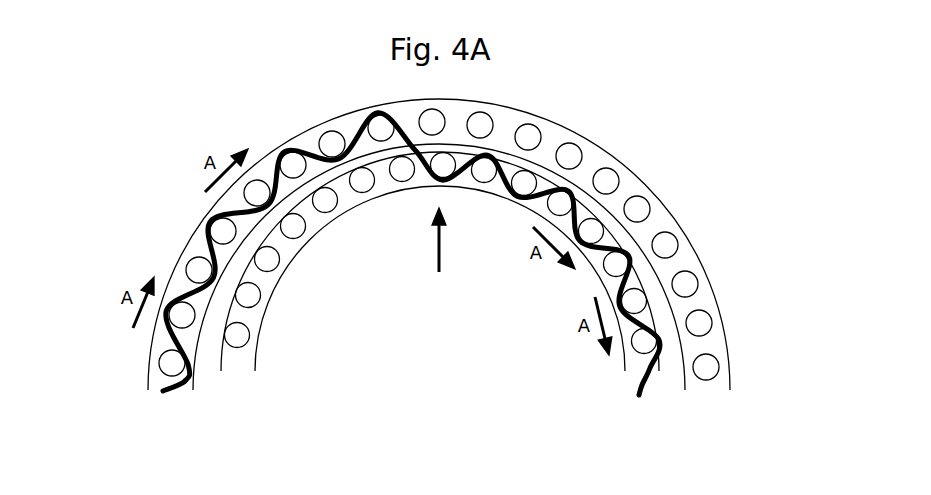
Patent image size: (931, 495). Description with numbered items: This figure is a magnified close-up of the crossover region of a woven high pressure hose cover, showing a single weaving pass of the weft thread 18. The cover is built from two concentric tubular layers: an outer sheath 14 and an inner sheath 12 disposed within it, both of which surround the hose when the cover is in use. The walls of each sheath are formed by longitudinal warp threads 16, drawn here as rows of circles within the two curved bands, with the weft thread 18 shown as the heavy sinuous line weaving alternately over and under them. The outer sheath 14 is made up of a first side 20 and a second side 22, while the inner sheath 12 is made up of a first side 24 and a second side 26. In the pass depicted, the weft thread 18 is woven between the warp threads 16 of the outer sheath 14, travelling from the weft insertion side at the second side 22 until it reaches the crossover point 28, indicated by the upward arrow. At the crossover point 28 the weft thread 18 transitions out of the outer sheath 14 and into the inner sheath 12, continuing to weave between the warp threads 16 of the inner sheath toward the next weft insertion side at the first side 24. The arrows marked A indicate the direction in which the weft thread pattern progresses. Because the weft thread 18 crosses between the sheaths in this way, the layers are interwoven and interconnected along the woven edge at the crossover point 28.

The inner sheath 12 is at (347, 207).
The outer sheath 14 is at (600, 150).
The warp threads 16 is at (190, 265).
The weft thread 18 is at (215, 213).
The first side of the outer sheath 20 is at (715, 293).
The second side of the outer sheath 22 is at (152, 357).
The first side of the inner sheath 24 is at (597, 268).
The second side of the inner sheath 26 is at (258, 320).
The crossover point 28 is at (438, 253).